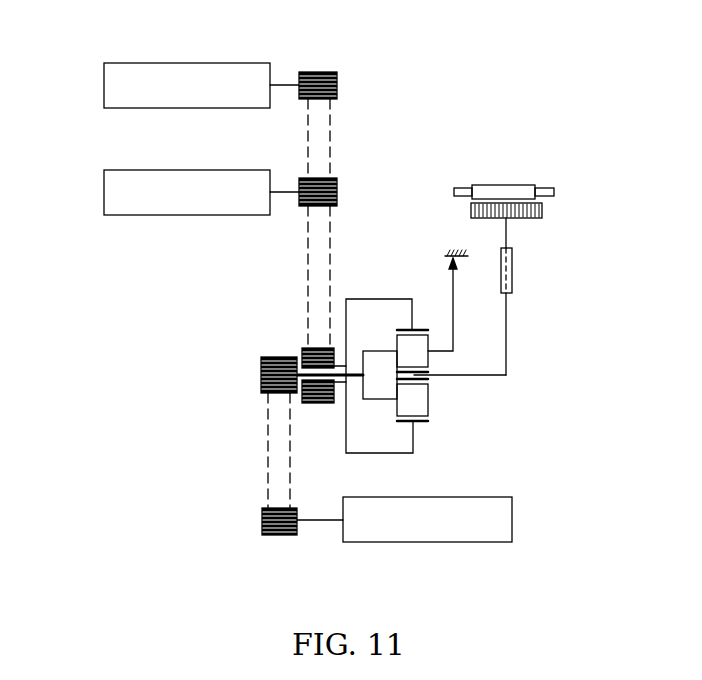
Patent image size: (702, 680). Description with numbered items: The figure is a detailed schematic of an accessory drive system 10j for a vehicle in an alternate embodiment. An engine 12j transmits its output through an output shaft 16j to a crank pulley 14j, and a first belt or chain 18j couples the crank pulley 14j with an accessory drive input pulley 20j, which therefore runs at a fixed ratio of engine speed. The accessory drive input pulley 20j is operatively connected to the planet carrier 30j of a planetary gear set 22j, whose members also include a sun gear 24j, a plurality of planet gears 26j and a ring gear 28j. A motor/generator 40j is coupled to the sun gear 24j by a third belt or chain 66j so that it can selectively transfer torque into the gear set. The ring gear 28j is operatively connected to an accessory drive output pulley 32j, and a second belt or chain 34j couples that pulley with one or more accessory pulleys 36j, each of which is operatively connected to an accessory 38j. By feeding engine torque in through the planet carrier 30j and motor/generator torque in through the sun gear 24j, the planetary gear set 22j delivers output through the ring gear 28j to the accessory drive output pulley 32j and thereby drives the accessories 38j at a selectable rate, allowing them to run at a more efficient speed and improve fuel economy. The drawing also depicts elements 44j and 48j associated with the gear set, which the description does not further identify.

The accessory drive system 10j is at (549, 85).
The engine 12j is at (478, 543).
The crank pulley 14j is at (272, 537).
The output shaft 16j is at (308, 521).
The first belt or chain 18j is at (264, 442).
The accessory drive input pulley 20j is at (262, 358).
The planetary gear set 22j is at (464, 407).
The sun gear 24j is at (433, 373).
The planet gears 26j is at (404, 348).
The ring gear 28j is at (413, 331).
The planet carrier 30j is at (372, 400).
The accessory drive output pulley 32j is at (331, 404).
The second belt or chain 34j is at (336, 257).
The accessory pulleys 36j is at (336, 72).
The accessories 38j is at (110, 63).
The motor/generator 40j is at (531, 180).
The actuator link 44j is at (458, 262).
The ground 48j is at (445, 242).
The third belt or chain 66j is at (521, 267).